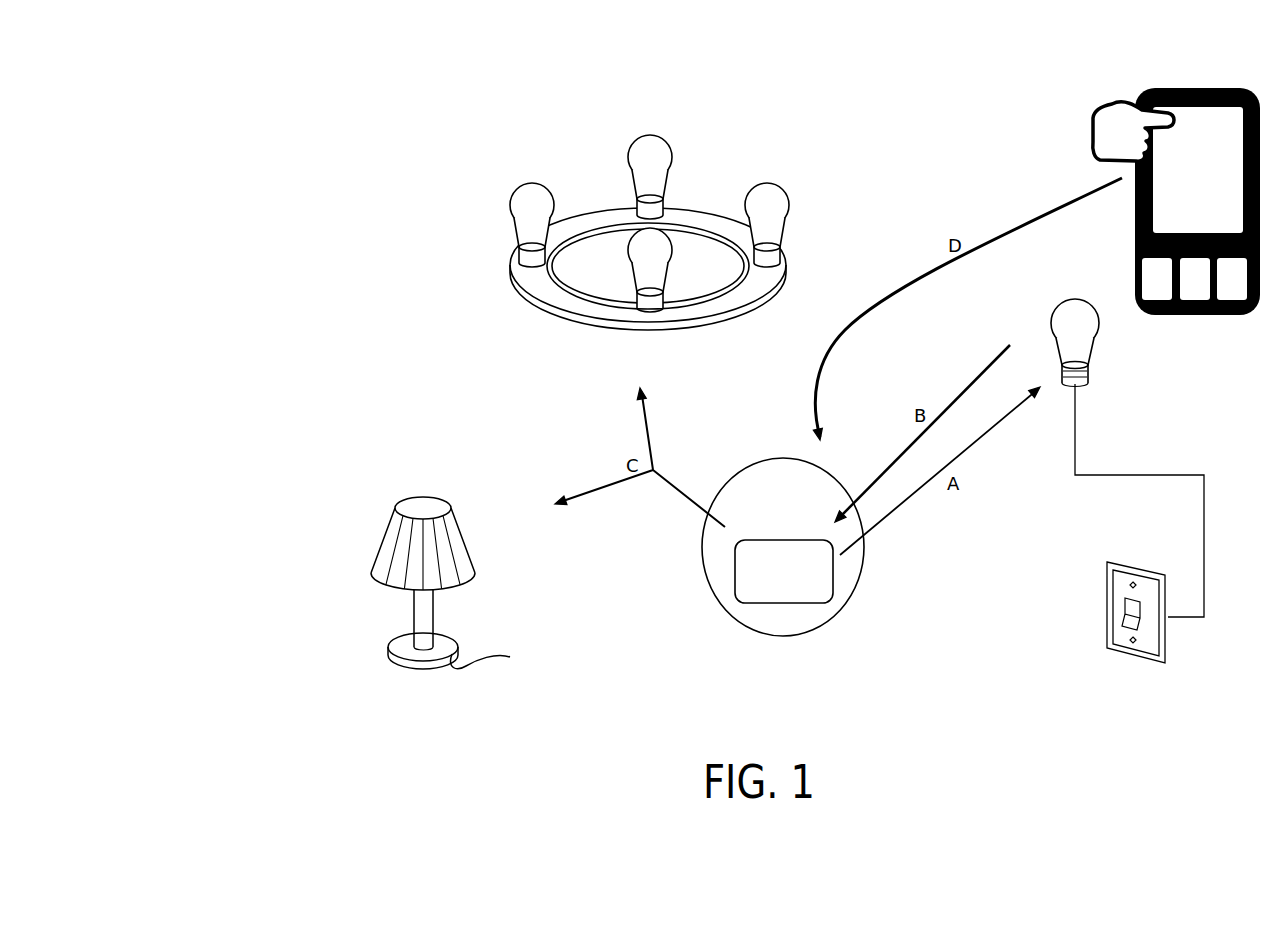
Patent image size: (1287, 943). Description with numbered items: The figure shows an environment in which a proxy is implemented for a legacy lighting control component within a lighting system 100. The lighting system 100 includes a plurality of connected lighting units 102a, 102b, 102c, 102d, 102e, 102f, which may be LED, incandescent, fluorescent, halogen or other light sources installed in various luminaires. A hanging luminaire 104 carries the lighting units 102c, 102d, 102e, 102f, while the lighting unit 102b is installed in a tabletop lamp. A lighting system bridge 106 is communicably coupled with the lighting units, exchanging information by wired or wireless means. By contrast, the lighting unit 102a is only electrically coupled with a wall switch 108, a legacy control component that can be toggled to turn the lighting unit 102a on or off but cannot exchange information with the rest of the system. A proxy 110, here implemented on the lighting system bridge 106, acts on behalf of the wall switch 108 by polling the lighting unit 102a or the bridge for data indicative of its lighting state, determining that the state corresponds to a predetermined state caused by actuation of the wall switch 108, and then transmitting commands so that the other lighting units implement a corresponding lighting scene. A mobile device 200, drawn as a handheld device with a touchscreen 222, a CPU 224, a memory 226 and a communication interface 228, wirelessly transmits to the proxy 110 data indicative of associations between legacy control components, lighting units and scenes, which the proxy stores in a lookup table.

The lighting system 100 is at (311, 146).
The lighting unit 102a is at (1052, 322).
The lighting unit 102b is at (464, 538).
The lighting unit 102c is at (509, 204).
The lighting unit 102d is at (673, 151).
The lighting unit 102e is at (790, 206).
The lighting unit 102f is at (622, 263).
The hanging luminaire 104 is at (728, 332).
The lighting system bridge 106 is at (783, 547).
The wall switch 108 is at (1098, 664).
The proxy 110 is at (784, 571).
The mobile device 200 is at (1165, 176).
The touchscreen 222 is at (1198, 170).
The CPU 224 is at (1157, 279).
The memory 226 is at (1195, 279).
The communication interface 228 is at (1232, 279).